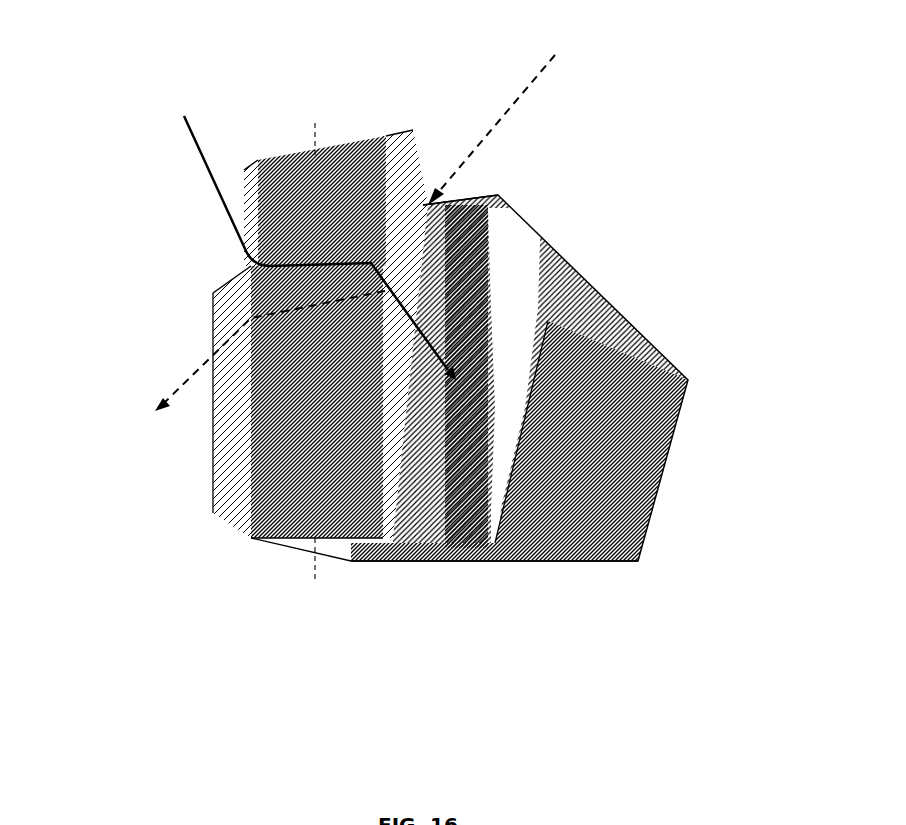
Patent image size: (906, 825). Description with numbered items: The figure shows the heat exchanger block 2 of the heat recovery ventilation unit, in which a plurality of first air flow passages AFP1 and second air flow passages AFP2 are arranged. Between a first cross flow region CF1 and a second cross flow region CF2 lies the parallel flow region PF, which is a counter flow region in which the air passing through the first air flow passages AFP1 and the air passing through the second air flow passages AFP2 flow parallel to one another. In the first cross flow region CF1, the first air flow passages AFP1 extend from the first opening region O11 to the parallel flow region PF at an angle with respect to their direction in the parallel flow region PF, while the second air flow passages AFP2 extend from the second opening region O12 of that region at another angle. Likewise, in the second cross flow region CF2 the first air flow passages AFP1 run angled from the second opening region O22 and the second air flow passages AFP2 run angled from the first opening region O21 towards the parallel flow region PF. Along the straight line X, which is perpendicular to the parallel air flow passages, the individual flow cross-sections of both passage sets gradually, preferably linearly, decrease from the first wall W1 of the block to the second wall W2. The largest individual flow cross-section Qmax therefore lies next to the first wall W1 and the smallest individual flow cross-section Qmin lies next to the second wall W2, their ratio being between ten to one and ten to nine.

The heat exchanger block 2 is at (633, 282).
The second wall W2 is at (345, 127).
The first wall W1 is at (262, 537).
The straight line x-x X is at (316, 351).
The smallest individual flow cross-section Qmin is at (378, 137).
The largest individual flow cross-section Qmax is at (245, 528).
The first air flow passages AFP1 is at (341, 235).
The second air flow passages AFP2 is at (331, 252).
The second opening region of the first cross flow region O12 is at (236, 258).
The second opening region of the second cross flow region O22 is at (445, 192).
The first opening region of the first cross flow region O11 is at (200, 400).
The first opening region of the second cross flow region O21 is at (503, 553).
The first cross flow region CF1 is at (212, 497).
The second cross flow region CF2 is at (417, 553).
The parallel flow region PF is at (300, 632).